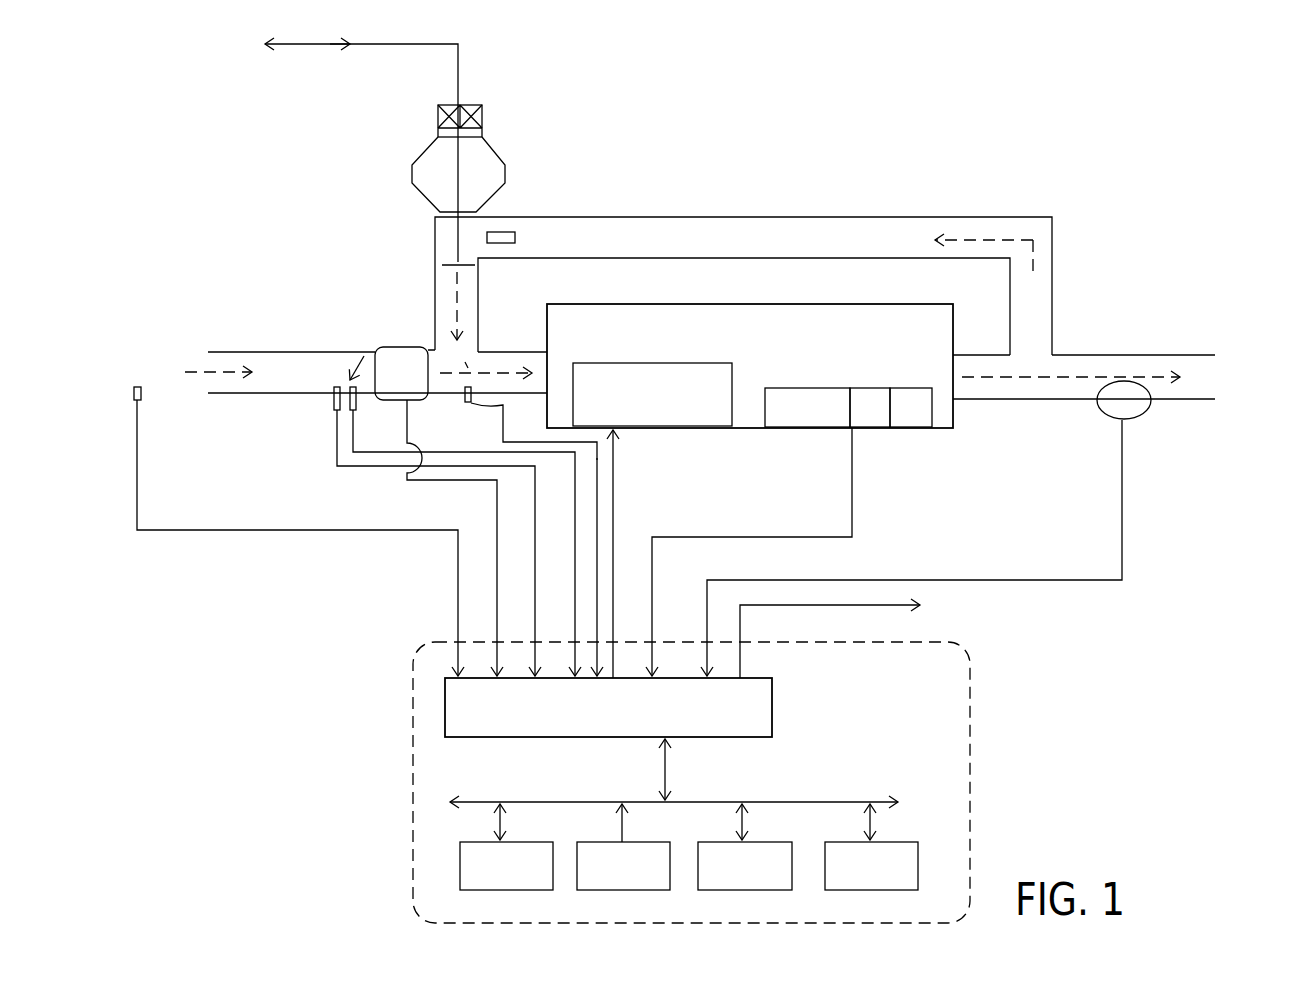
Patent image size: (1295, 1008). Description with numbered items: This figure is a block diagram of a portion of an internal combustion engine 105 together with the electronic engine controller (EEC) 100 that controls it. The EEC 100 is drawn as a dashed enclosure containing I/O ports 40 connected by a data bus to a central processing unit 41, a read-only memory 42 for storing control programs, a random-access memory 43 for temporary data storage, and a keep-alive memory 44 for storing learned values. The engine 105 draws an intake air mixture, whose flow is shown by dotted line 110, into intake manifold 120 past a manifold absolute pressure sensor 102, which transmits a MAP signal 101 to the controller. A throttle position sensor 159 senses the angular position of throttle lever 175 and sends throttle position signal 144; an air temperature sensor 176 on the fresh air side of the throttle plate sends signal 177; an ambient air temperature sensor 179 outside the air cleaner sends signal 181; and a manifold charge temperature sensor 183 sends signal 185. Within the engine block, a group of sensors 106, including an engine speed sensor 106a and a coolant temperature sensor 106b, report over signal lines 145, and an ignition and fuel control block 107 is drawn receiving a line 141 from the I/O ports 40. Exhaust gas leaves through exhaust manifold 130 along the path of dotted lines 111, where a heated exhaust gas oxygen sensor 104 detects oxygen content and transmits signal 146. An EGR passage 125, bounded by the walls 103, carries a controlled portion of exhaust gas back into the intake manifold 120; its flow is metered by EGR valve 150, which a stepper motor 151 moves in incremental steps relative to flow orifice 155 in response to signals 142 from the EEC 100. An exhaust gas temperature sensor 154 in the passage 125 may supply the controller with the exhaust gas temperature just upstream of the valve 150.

The stepper motor control signals 142 is at (403, 45).
The stepper motor 151 is at (436, 113).
The EGR valve 150 is at (459, 186).
The flow orifice 155 is at (452, 268).
The EGR passage walls 103 is at (683, 217).
The EGR passage 125 is at (772, 254).
The exhaust gas temperature sensor 154 is at (510, 243).
The exhaust gas flow lines 111 is at (990, 240).
The internal combustion engine 105 is at (738, 304).
The ignition and fuel control 107 is at (613, 363).
The sensors 106 is at (822, 432).
The engine speed sensor 106a is at (864, 398).
The engine coolant temperature sensor 106b is at (908, 400).
The manifold absolute pressure sensor 102 is at (400, 347).
The throttle lever 175 is at (358, 352).
The intake manifold 120 is at (322, 392).
The intake charge air flow line 110 is at (192, 372).
The ambient air temperature sensor 179 is at (134, 393).
The ambient temperature signal 181 is at (458, 575).
The air temperature sensor 176 is at (334, 408).
The air charge temperature signal 177 is at (337, 465).
The throttle position sensor 159 is at (354, 400).
The manifold charge temperature sensor 183 is at (503, 410).
The throttle position signal 144 is at (502, 442).
The manifold charge temperature signal 185 is at (598, 515).
The MAP signal 101 is at (495, 487).
The ignition and fuel control command line 141 is at (614, 479).
The sensor signal lines 145 is at (687, 537).
The oxygen sensor signal 146 is at (740, 579).
The heated exhaust gas oxygen sensor 104 is at (1136, 418).
The exhaust manifold 130 is at (1235, 395).
The I/O ports 40 is at (775, 697).
The electronic engine controller 100 is at (973, 845).
The central processing unit 41 is at (498, 891).
The read-only memory 42 is at (628, 891).
The random-access memory 43 is at (748, 891).
The keep-alive memory 44 is at (876, 891).